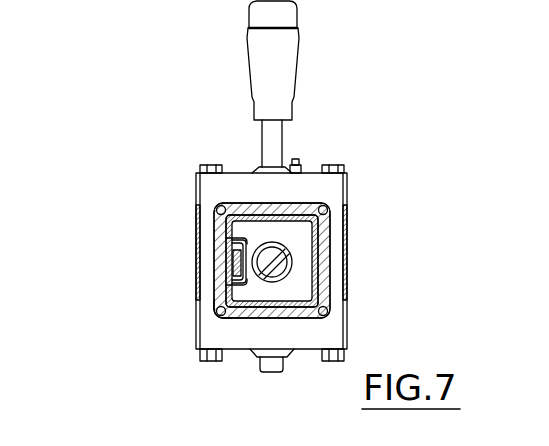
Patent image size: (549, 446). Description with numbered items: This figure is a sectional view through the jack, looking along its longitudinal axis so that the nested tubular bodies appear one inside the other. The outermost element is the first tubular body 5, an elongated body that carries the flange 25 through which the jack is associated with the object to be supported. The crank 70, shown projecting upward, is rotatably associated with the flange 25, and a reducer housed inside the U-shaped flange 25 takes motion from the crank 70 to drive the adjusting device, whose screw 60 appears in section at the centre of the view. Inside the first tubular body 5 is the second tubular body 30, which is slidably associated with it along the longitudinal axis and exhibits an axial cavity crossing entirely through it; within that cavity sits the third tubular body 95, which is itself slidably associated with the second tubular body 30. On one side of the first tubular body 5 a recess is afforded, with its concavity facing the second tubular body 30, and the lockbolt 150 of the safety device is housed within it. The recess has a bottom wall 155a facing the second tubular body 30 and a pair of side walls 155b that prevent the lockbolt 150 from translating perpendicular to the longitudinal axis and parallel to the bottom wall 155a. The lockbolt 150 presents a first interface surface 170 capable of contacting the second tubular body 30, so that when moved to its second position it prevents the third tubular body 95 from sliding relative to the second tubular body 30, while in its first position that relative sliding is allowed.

The crank 70 is at (280, 66).
The screw 60 is at (281, 257).
The flange 25 is at (207, 187).
The first tubular body 5 is at (327, 225).
The second tubular body 30 is at (322, 255).
The third tubular body 95 is at (313, 284).
The lockbolt 150 is at (232, 252).
The first interface surface 170 is at (233, 263).
The side walls 155b is at (238, 242).
The bottom wall 155a is at (223, 302).